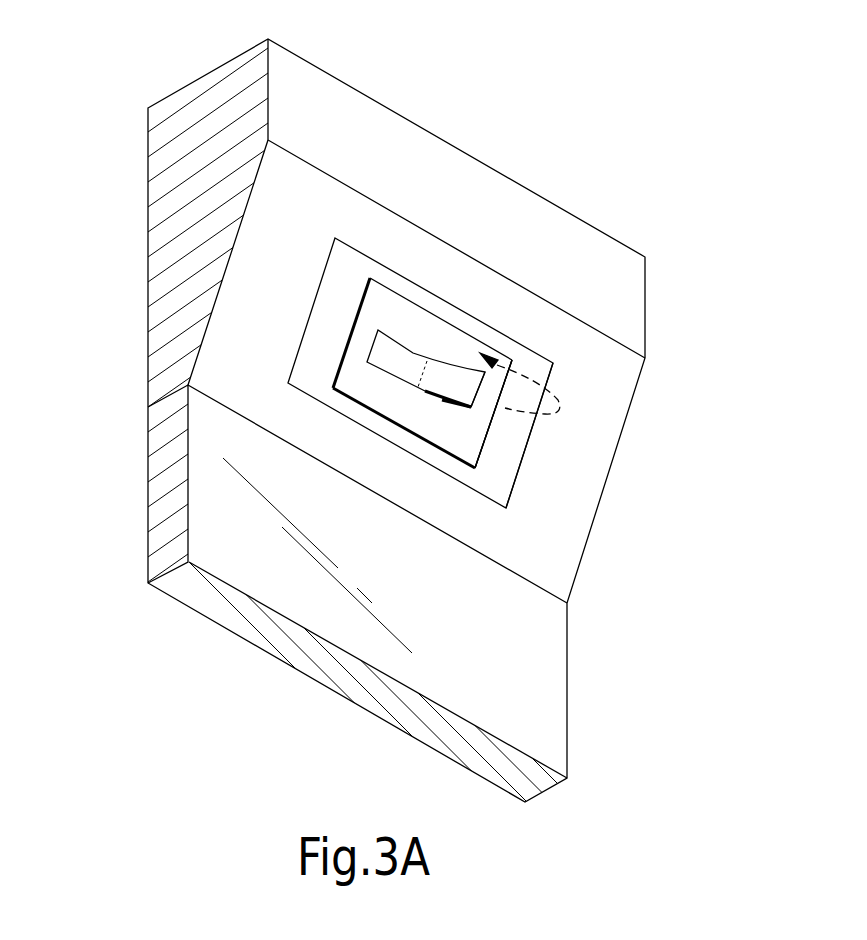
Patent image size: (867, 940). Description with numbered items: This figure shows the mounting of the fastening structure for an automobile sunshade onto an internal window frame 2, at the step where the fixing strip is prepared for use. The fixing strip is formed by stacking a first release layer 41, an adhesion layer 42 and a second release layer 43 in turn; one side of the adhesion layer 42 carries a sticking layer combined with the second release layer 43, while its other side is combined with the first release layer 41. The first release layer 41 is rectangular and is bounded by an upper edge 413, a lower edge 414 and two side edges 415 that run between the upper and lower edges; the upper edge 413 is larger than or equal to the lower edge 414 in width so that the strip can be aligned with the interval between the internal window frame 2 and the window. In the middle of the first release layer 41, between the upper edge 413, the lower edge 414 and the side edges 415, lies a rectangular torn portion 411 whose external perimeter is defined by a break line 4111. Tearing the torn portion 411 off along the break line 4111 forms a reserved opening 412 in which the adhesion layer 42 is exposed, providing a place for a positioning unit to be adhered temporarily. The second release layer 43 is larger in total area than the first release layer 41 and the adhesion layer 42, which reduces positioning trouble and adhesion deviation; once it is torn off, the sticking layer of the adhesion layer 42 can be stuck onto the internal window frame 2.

The internal window frame 2 is at (164, 95).
The first release layer 41 is at (340, 374).
The torn portion 411 is at (412, 357).
The break line 4111 is at (403, 347).
The reserved opening 412 is at (442, 400).
The upper edge 413 is at (395, 310).
The lower edge 414 is at (408, 417).
The side edges 415 is at (362, 342).
The adhesion layer 42 is at (488, 418).
The second release layer 43 is at (537, 368).